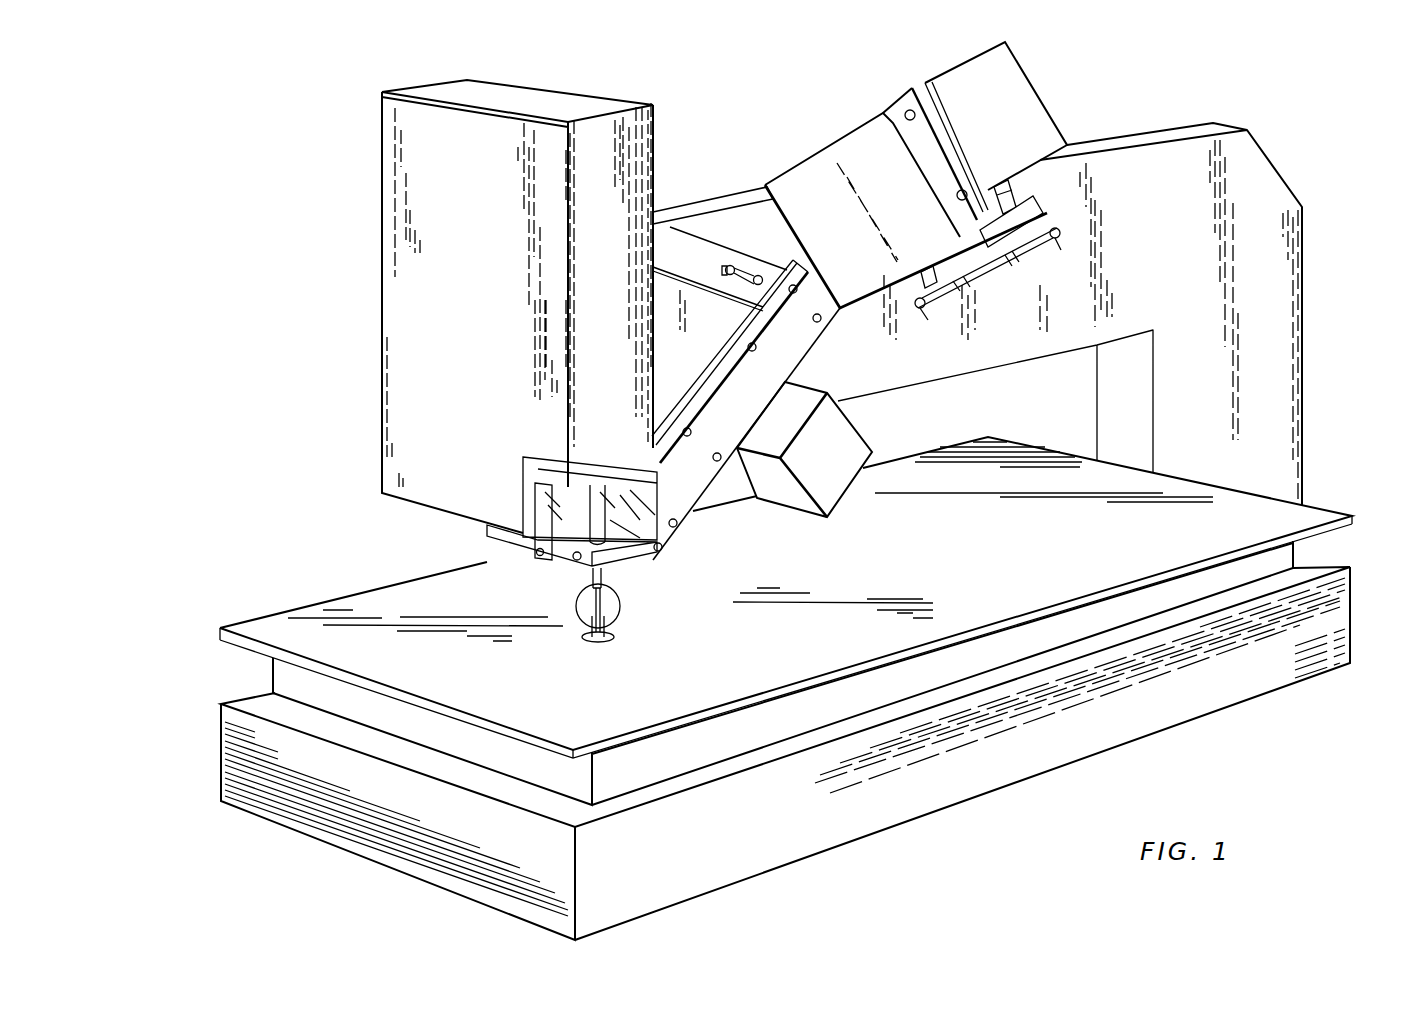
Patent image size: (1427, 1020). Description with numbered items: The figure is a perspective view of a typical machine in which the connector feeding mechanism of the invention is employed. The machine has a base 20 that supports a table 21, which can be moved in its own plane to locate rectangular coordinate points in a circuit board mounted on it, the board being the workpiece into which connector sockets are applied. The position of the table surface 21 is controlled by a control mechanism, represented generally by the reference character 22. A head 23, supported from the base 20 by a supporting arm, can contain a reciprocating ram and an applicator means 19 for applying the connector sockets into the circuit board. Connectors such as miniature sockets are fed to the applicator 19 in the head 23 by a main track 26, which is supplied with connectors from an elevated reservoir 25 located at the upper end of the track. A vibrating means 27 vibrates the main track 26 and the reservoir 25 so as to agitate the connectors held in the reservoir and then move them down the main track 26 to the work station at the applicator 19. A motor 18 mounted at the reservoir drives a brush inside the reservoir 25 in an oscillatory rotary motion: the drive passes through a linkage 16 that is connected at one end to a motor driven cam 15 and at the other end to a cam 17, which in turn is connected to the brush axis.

The motor driven cam 15 is at (1040, 203).
The linkage 16 is at (997, 266).
The cam 17 is at (905, 282).
The motor 18 is at (1017, 102).
The applicator means 19 is at (580, 603).
The base 20 is at (1120, 723).
The table 21 is at (1061, 563).
The control mechanism 22 is at (1268, 558).
The head 23 is at (395, 319).
The elevated reservoir 25 is at (820, 178).
The main track 26 is at (768, 411).
The vibrating means 27 is at (830, 488).